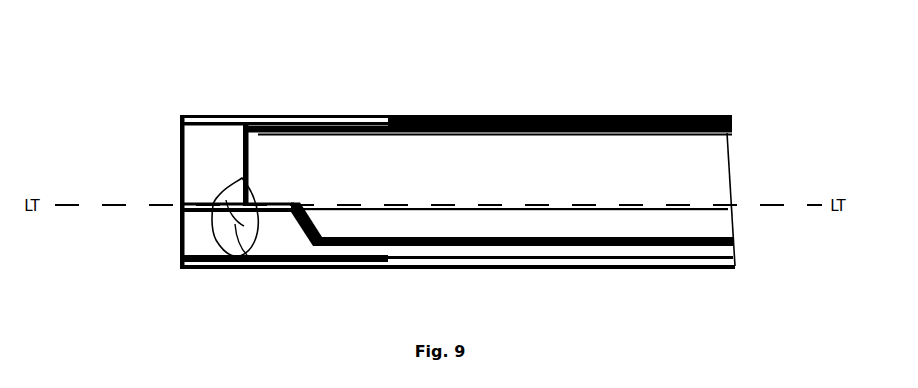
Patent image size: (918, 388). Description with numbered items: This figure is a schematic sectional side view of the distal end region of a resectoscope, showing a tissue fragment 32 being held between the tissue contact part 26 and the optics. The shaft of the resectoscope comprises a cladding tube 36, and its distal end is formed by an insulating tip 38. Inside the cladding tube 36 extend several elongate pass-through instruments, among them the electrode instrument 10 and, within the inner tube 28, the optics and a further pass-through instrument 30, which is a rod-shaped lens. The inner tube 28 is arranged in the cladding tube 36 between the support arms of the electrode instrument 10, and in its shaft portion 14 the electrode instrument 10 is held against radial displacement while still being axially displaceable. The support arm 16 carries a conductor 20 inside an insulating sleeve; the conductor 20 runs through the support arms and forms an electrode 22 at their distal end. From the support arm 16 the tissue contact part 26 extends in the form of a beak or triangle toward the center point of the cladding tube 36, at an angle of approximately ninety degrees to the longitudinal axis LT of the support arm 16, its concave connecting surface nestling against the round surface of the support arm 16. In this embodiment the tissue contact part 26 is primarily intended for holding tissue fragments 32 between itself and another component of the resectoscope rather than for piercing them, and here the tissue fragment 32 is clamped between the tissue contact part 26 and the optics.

The electrode instrument 10 is at (640, 258).
The shaft portion 14 is at (515, 237).
The support arm 16 is at (255, 212).
The conductor 20 is at (413, 238).
The electrode 22 is at (180, 223).
The tissue contact part 26 is at (217, 203).
The inner tube 28 is at (703, 115).
The pass-through instrument 30 is at (707, 167).
The tissue fragment 32 is at (232, 257).
The cladding tube 36 is at (614, 115).
The insulating tip 38 is at (222, 115).